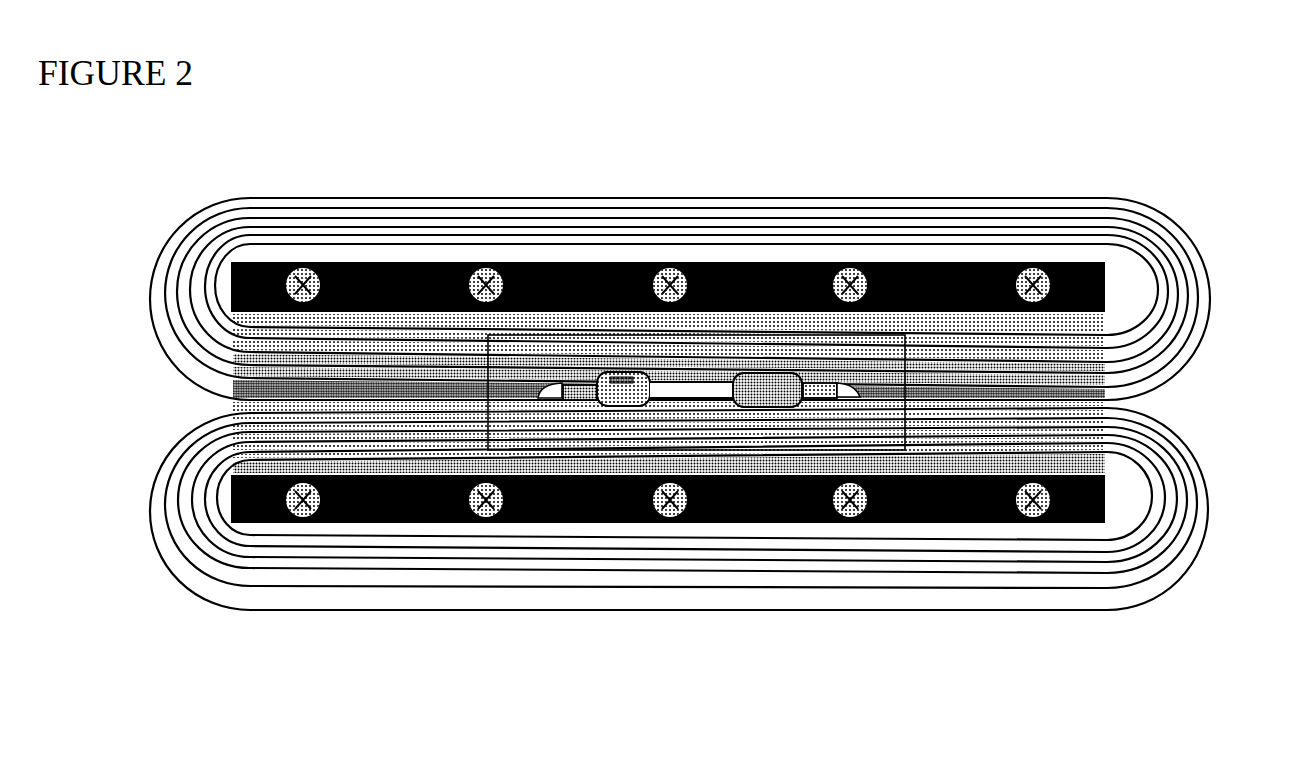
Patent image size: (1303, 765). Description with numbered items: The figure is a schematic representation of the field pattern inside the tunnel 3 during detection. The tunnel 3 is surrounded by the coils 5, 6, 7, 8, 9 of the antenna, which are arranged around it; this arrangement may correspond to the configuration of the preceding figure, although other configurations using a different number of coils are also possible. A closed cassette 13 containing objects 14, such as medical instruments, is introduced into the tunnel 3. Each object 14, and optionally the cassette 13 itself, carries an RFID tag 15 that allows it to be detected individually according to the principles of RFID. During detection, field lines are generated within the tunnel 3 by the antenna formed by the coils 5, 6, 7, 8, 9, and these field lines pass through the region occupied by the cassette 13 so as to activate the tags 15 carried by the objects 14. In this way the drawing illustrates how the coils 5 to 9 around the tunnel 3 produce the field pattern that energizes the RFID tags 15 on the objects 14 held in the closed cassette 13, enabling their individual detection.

The tunnel 3 is at (1184, 417).
The coil 5 is at (1033, 252).
The coil 6 is at (850, 252).
The coil 7 is at (672, 252).
The coil 8 is at (486, 252).
The coil 9 is at (296, 252).
The closed cassette 13 is at (911, 466).
The object 14 is at (710, 406).
The RFID tag 15 is at (612, 403).